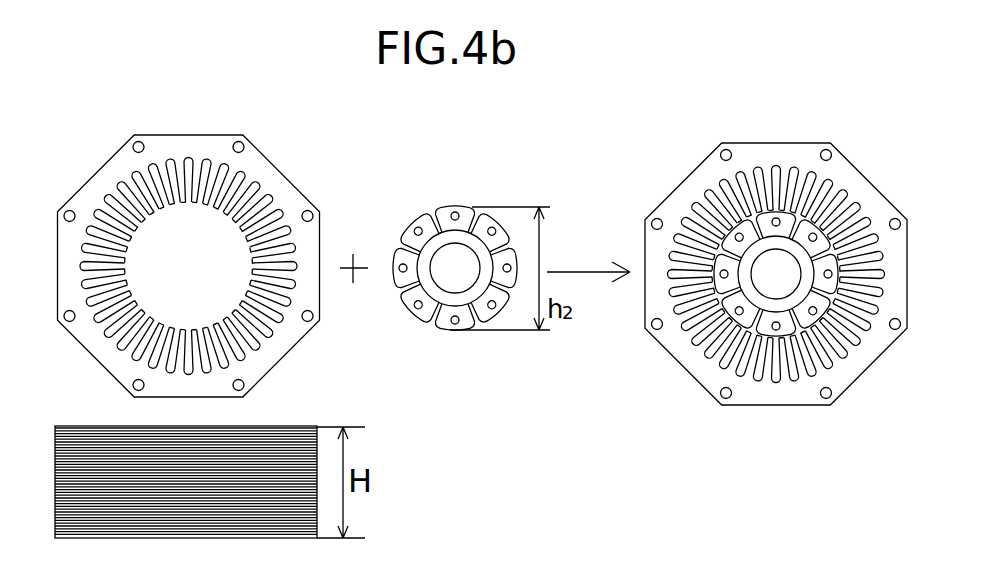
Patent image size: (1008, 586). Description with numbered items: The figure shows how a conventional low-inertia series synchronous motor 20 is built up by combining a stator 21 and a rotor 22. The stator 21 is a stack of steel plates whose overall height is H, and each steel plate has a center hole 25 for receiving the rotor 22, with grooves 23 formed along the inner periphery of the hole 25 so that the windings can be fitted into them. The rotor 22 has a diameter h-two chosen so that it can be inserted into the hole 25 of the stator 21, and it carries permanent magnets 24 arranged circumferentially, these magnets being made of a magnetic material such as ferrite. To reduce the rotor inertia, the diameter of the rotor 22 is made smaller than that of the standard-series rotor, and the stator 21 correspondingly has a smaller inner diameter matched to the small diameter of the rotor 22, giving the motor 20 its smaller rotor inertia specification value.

The low-inertia series synchronous motor 20 is at (783, 132).
The stator 21 is at (204, 234).
The rotor 22 is at (447, 227).
The grooves 23 is at (188, 223).
The permanent magnets 24 is at (447, 237).
The center hole 25 is at (158, 217).